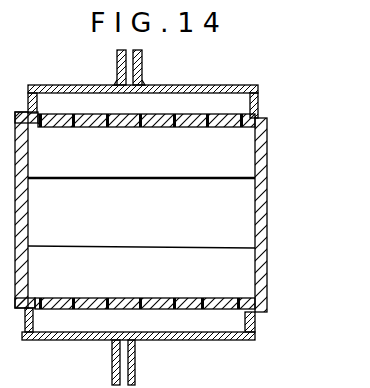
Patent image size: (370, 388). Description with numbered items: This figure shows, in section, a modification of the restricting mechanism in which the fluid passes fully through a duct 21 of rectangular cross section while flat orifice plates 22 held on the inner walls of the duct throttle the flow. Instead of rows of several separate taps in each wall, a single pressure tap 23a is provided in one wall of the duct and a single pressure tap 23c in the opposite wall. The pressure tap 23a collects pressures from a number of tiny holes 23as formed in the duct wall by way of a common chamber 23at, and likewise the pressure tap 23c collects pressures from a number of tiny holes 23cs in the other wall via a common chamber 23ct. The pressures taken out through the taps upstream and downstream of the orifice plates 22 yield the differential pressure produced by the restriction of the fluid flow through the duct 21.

The duct 21 is at (267, 196).
The orifice plate 22 is at (238, 155).
The pressure tap 23a is at (142, 63).
The common chamber 23at is at (72, 107).
The tiny holes 23as is at (40, 128).
The pressure tap 23c is at (135, 365).
The common chamber 23ct is at (232, 327).
The tiny holes 23cs is at (203, 302).